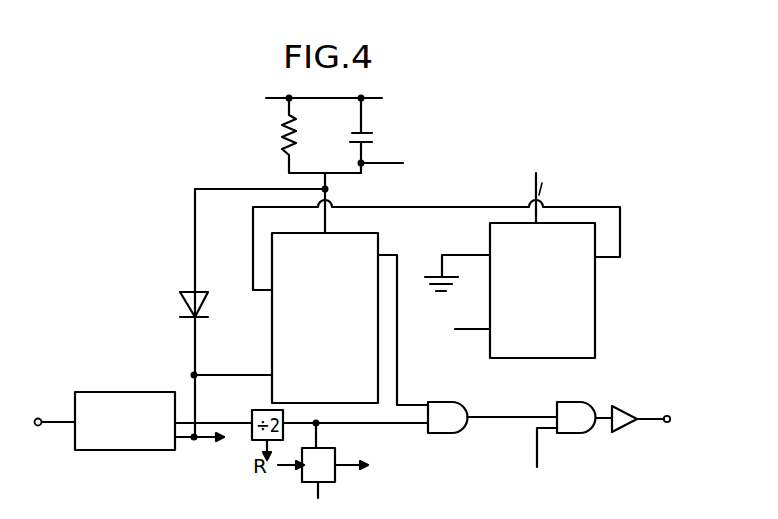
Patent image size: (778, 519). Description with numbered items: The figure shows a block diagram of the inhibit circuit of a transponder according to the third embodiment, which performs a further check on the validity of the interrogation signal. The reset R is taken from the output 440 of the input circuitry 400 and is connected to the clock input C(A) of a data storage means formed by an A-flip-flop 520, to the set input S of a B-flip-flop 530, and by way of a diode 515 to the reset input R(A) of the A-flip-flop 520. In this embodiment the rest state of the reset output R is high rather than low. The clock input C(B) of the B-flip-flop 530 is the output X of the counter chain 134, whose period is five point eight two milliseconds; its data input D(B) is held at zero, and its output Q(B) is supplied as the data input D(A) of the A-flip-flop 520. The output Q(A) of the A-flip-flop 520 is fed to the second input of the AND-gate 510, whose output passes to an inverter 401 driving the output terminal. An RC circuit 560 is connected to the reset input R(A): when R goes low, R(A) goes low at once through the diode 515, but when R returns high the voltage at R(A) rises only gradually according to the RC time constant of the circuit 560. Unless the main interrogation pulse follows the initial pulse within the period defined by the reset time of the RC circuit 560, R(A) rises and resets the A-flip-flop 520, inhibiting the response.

The RC circuit 560 is at (385, 138).
The diode 515 is at (178, 303).
The A-flip-flop 520 is at (272, 313).
The B-flip-flop 530 is at (595, 308).
The AND-gate 510 is at (446, 402).
The output inverter 401 is at (622, 405).
The input circuitry 400 is at (157, 394).
The output 440 is at (190, 435).
The counter chain 134 is at (331, 451).